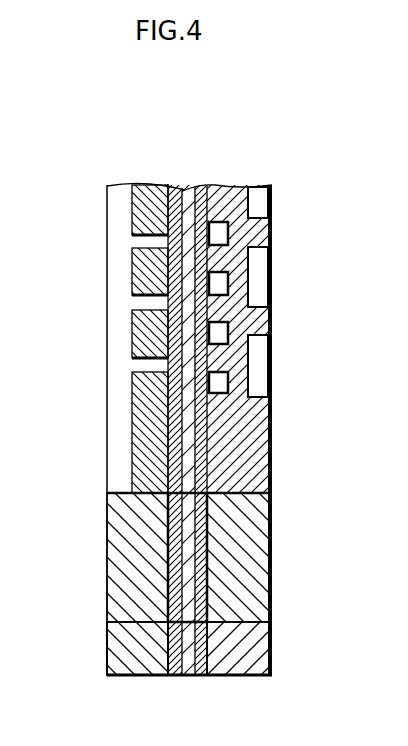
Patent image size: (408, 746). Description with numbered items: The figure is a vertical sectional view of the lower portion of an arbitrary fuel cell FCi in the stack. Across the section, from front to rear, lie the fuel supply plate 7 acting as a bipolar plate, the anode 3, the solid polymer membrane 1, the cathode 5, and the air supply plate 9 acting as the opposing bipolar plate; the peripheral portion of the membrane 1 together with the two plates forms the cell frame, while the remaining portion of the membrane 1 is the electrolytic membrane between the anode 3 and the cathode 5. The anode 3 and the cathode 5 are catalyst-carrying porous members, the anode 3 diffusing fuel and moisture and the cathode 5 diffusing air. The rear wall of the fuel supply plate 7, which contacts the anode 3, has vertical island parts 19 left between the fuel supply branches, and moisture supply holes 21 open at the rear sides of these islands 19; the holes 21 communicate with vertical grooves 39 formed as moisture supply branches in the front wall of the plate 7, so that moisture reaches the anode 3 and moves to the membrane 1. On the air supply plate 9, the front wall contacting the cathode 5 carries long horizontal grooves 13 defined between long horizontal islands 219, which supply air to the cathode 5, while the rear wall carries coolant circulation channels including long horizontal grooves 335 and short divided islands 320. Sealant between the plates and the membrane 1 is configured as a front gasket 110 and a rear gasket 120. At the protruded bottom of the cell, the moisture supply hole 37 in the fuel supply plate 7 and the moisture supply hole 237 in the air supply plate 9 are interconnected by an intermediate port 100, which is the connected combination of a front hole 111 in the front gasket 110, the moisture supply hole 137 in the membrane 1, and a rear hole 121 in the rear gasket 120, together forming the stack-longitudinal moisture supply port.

The solid polymer membrane 1 is at (187, 182).
The anode 3 is at (175, 182).
The cathode 5 is at (201, 182).
The fuel supply plate 7 is at (103, 673).
The air supply plate 9 is at (276, 673).
The long horizontal grooves 13 is at (242, 338).
The vertical island parts 19 is at (185, 383).
The moisture supply holes 21 is at (135, 240).
The moisture supply hole 37 is at (143, 622).
The vertical grooves 39 is at (120, 378).
The intermediate port 100 is at (200, 560).
The front gasket 110 is at (165, 470).
The front hole 111 is at (167, 508).
The rear gasket 120 is at (208, 460).
The rear hole 121 is at (208, 508).
The moisture supply hole 137 is at (188, 603).
The long horizontal islands 219 is at (222, 333).
The moisture supply hole 237 is at (244, 622).
The short divided islands 320 is at (262, 229).
The long horizontal grooves 335 is at (263, 267).
The fuel cell FCi is at (308, 187).